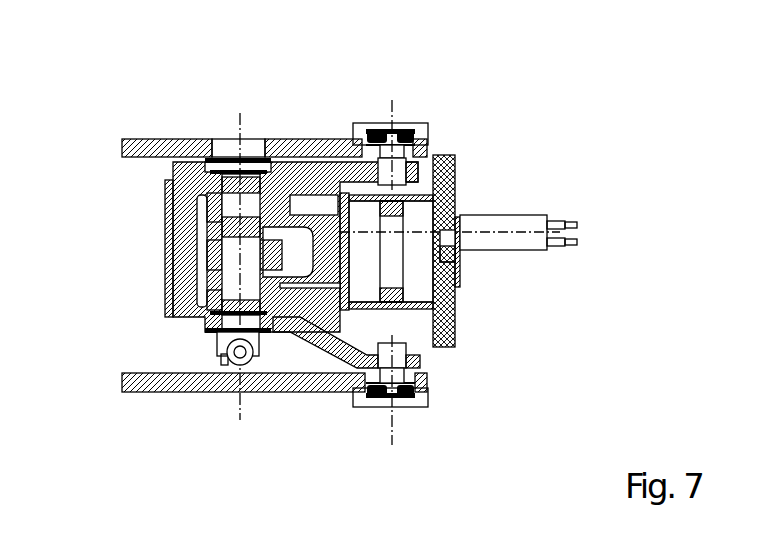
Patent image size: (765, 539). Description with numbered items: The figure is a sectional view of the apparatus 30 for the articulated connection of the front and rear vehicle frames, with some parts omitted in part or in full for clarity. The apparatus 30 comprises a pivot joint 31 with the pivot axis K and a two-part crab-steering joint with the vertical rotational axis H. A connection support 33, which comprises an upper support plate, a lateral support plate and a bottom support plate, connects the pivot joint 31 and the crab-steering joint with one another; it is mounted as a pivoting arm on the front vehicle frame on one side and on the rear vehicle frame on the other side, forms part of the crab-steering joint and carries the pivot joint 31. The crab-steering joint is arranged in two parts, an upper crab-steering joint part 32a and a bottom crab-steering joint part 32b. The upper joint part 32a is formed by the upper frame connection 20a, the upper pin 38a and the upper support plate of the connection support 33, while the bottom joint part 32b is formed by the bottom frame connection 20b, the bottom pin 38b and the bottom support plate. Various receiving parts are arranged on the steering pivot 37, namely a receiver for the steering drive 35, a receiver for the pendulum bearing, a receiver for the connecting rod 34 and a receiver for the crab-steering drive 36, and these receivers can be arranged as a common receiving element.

The upper frame connection 20a is at (123, 140).
The bottom frame connection 20b is at (175, 393).
The apparatus 30 is at (480, 136).
The pivot joint 31 is at (255, 116).
The upper crab-steering joint part 32a is at (410, 110).
The bottom crab-steering joint part 32b is at (432, 416).
The connection support 33 is at (165, 196).
The connecting rod 34 is at (328, 369).
The steering drive 35 is at (513, 242).
The crab-steering drive 36 is at (218, 352).
The steering pivot 37 is at (177, 245).
The upper pin 38a is at (378, 120).
The bottom pin 38b is at (373, 407).
The pivot axis K is at (240, 412).
The vertical rotational axis H is at (392, 428).